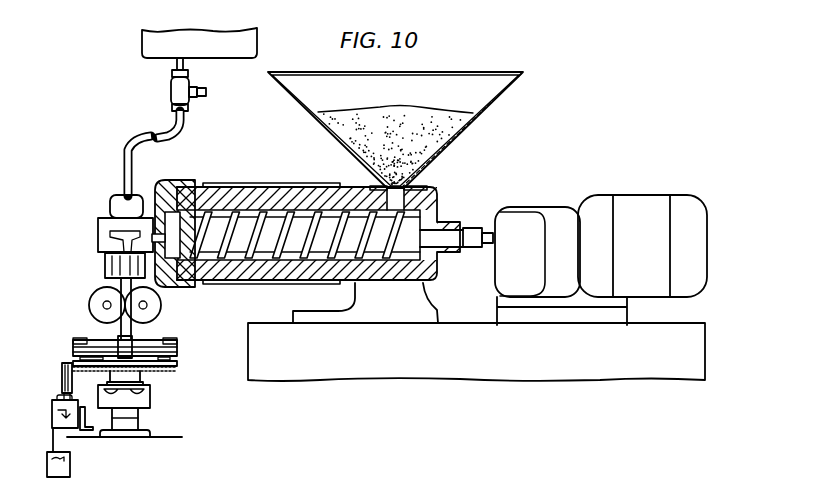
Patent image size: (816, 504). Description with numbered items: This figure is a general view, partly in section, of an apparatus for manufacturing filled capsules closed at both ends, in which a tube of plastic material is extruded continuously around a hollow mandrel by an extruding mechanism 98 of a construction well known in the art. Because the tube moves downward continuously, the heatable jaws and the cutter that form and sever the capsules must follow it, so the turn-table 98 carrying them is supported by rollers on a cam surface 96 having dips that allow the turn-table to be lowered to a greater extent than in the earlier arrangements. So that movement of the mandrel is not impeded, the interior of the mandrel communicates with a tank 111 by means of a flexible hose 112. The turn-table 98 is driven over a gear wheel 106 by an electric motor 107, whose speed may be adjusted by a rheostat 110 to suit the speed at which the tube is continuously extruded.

The cam surface 96 is at (152, 400).
The extruding mechanism / turn-table 98 is at (182, 350).
The gear wheel 106 is at (60, 377).
The electric motor 107 is at (51, 412).
The rheostat 110 is at (65, 467).
The tank 111 is at (255, 40).
The flexible hose 112 is at (130, 137).